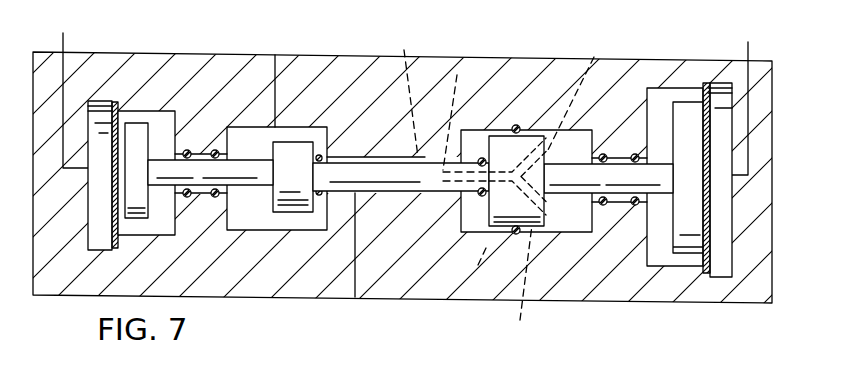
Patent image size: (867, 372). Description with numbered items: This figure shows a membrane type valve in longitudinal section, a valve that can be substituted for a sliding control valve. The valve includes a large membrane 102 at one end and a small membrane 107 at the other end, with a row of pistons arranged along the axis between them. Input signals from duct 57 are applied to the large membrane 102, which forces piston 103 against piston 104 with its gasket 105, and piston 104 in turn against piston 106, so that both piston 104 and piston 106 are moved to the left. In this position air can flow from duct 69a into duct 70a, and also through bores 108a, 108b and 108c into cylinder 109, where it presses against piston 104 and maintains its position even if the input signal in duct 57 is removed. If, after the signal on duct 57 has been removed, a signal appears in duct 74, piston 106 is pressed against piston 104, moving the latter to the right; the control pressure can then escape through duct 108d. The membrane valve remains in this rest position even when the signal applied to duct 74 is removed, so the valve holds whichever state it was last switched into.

The duct 74 is at (62, 46).
The small membrane 107 is at (117, 101).
The duct 69a is at (276, 80).
The bore 108a is at (416, 93).
The bore 108b is at (457, 75).
The piston 104 is at (525, 138).
The gasket 105 is at (483, 158).
The bore 108c is at (573, 191).
The cylinder 109 is at (593, 154).
The duct 57 is at (750, 52).
The piston 106 is at (358, 184).
The duct 70a is at (357, 283).
The duct 108d is at (478, 265).
The piston 103 is at (665, 200).
The large membrane 102 is at (704, 275).